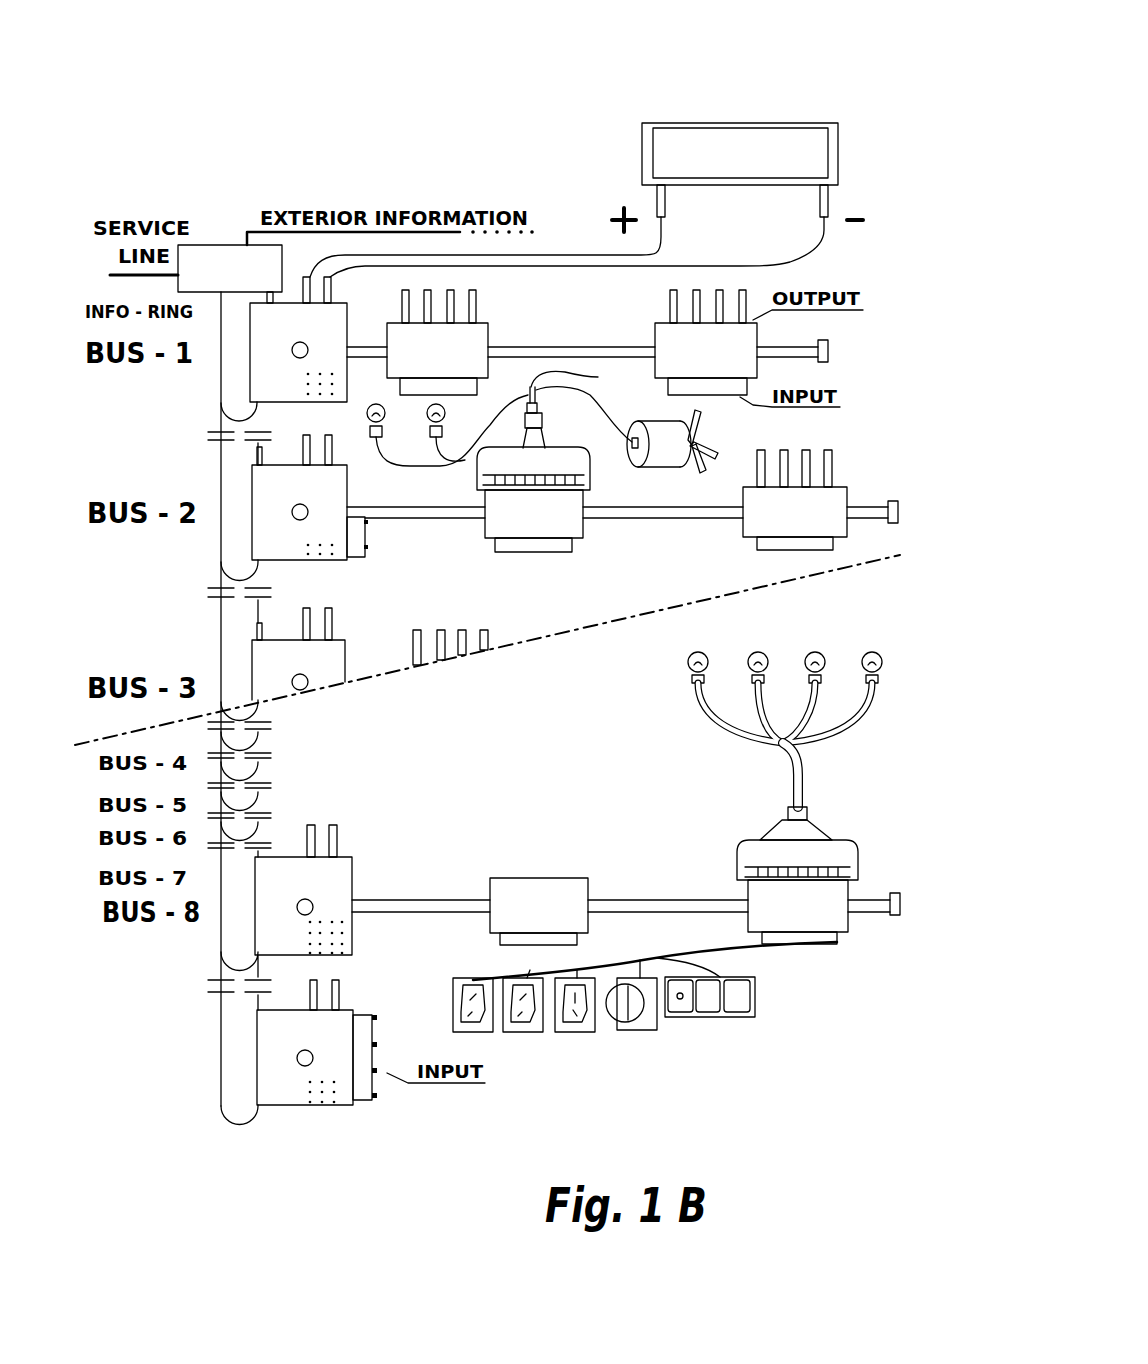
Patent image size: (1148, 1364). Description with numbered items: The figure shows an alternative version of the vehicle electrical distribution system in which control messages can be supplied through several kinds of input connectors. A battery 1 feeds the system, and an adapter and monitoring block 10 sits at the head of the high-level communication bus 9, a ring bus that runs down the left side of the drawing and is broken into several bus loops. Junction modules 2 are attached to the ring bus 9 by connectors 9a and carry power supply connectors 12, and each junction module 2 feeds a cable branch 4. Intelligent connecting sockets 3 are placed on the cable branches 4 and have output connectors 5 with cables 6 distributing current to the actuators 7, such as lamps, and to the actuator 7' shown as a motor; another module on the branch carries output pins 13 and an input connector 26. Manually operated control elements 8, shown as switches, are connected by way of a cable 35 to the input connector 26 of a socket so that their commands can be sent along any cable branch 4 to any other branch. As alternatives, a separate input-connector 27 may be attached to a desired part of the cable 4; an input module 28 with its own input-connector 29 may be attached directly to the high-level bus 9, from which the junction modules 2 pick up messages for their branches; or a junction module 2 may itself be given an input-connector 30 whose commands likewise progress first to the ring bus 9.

The battery 1 is at (738, 123).
The junction module 2 is at (337, 318).
The intelligent connecting socket 3 is at (487, 330).
The cable branch 4 is at (557, 347).
The output connector 5 is at (577, 462).
The cable 6 is at (545, 393).
The actuator 7 is at (624, 569).
The actuator 7' is at (671, 422).
The manually operated control element 8 is at (757, 997).
The high-level communication bus 9 is at (221, 532).
The connector for the communication bus 9a is at (257, 631).
The adapter and monitoring block 10 is at (223, 250).
The power supply connector 12 is at (333, 825).
The output pins 13 is at (784, 453).
The input connector of the socket 26 is at (783, 545).
The input-connector 27 is at (535, 878).
The input module 28 is at (328, 1023).
The input-connector of the input module 29 is at (362, 1040).
The input-connector 30 is at (363, 557).
The cable 35 is at (710, 945).